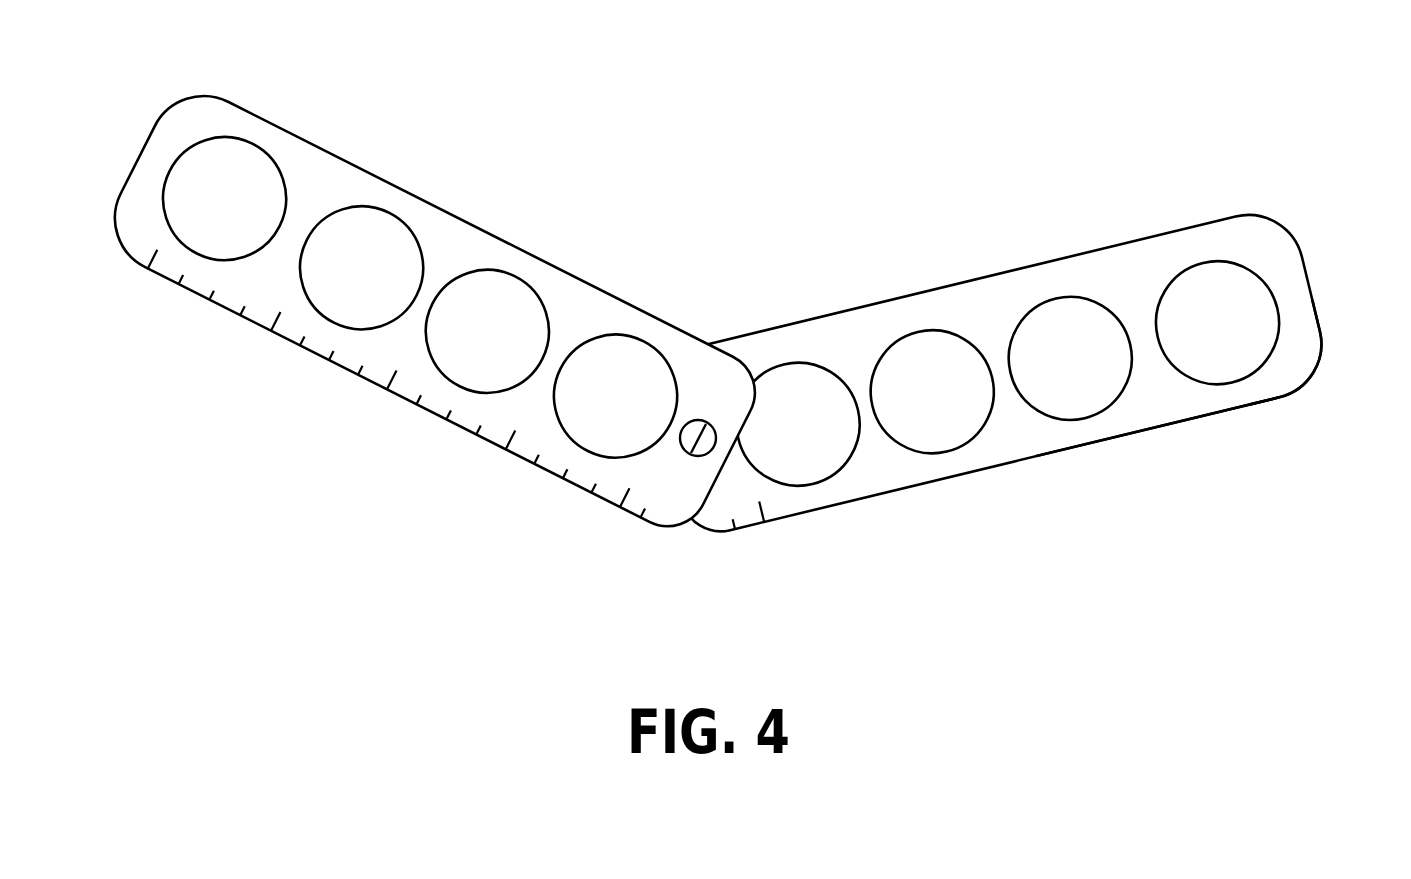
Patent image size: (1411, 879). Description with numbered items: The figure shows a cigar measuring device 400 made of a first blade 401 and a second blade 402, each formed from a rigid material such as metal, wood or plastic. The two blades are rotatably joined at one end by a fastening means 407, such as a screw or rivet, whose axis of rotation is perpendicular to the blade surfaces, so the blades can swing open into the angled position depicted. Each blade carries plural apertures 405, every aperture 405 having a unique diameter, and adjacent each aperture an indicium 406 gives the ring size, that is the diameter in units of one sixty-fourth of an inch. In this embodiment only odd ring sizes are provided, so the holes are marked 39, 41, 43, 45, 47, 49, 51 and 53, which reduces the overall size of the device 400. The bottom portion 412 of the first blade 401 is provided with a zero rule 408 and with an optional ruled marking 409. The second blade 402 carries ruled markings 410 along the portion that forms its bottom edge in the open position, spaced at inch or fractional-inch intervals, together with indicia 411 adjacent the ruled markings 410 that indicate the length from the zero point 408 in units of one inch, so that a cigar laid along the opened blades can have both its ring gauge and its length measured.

The cigar measuring device 400 is at (1345, 565).
The first blade 401 is at (1283, 267).
The second blade 402 is at (207, 118).
The apertures 405 is at (1127, 304).
The indicia 406 is at (558, 318).
The fastening means 407 is at (690, 455).
The zero rule 408 is at (1283, 383).
The ruled markings 409 is at (763, 518).
The ruled markings 410 is at (528, 461).
The indicia 411 is at (266, 323).
The bottom portion 412 is at (998, 468).
The aperture size 39 is at (798, 412).
The aperture size 41 is at (615, 392).
The aperture size 43 is at (932, 380).
The aperture size 45 is at (487, 327).
The aperture size 47 is at (1070, 346).
The aperture size 49 is at (361, 262).
The aperture size 51 is at (1217, 311).
The aperture size 53 is at (224, 192).